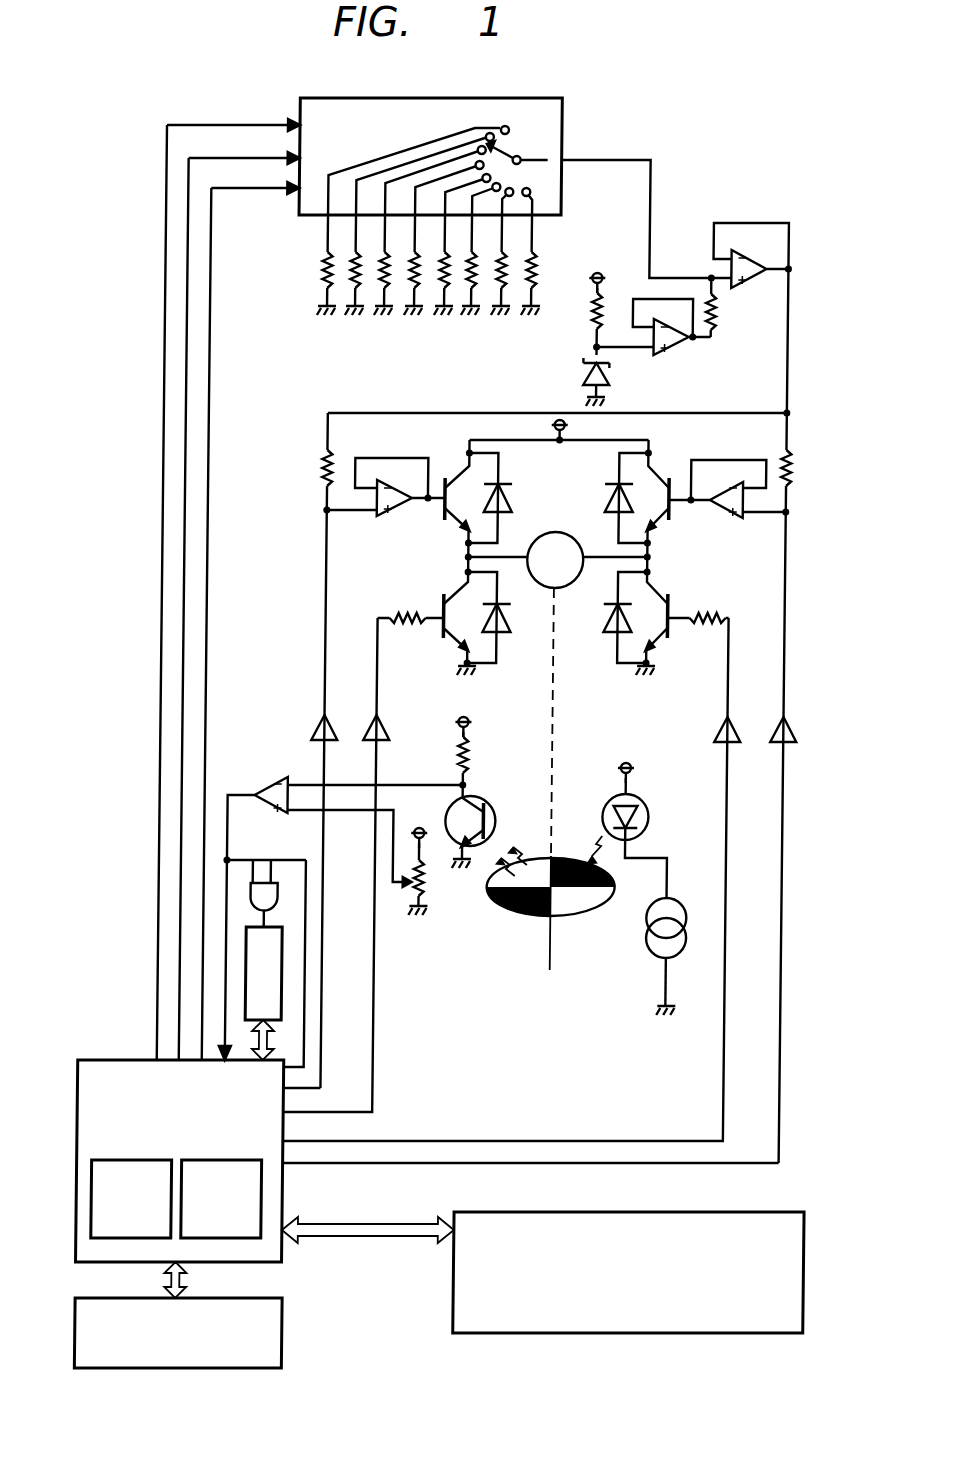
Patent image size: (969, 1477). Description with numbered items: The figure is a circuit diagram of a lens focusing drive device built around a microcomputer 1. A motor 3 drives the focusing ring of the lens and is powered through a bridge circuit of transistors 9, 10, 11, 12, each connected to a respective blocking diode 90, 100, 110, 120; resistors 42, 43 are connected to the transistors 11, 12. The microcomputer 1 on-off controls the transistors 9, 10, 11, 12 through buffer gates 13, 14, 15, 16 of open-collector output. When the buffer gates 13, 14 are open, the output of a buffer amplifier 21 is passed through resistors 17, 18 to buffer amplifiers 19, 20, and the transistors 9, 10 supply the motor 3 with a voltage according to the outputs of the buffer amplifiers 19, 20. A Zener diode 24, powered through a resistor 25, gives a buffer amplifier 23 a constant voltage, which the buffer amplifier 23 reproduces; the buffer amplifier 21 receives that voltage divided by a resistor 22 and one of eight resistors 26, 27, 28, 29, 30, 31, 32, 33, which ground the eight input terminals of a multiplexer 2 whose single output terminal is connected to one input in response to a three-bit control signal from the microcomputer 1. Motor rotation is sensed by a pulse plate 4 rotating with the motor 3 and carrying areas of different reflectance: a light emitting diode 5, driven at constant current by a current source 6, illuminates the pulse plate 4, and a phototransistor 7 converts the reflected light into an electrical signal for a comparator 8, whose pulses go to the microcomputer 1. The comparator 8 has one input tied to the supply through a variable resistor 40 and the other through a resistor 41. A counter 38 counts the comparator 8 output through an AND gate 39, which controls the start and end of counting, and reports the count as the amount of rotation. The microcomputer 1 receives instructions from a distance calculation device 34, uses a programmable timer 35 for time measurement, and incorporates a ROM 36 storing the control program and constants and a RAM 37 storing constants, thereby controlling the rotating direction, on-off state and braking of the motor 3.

The microcomputer 1 is at (179, 1135).
The multiplexer 2 is at (561, 133).
The motor 3 is at (558, 532).
The pulse plate 4 is at (574, 918).
The light emitting diode 5 is at (652, 817).
The current source 6 is at (680, 906).
The phototransistor 7 is at (490, 815).
The comparator 8 is at (274, 809).
The transistor 9 is at (448, 516).
The transistor 10 is at (666, 516).
The transistor 11 is at (441, 629).
The transistor 12 is at (672, 629).
The buffer gate 13 is at (316, 730).
The buffer gate 14 is at (792, 733).
The buffer gate 15 is at (388, 734).
The buffer gate 16 is at (724, 736).
The resistor 17 is at (325, 476).
The resistor 18 is at (792, 482).
The buffer amplifier 19 is at (402, 512).
The buffer amplifier 20 is at (719, 516).
The buffer amplifier 21 is at (746, 274).
The resistor 22 is at (713, 310).
The buffer amplifier 23 is at (672, 346).
The Zener diode 24 is at (588, 376).
The resistor 25 is at (593, 331).
The resistor 26 is at (326, 262).
The resistor 27 is at (351, 256).
The resistor 28 is at (380, 288).
The resistor 29 is at (410, 290).
The resistor 30 is at (440, 289).
The resistor 31 is at (468, 290).
The resistor 32 is at (507, 260).
The resistor 33 is at (534, 268).
The distance calculation device 34 is at (803, 1213).
The programmable timer 35 is at (292, 1348).
The ROM 36 is at (100, 1200).
The RAM 37 is at (270, 1200).
The counter 38 is at (289, 974).
The AND gate 39 is at (284, 898).
The variable resistor 40 is at (430, 892).
The resistor 41 is at (474, 770).
The resistor 42 is at (411, 616).
The resistor 43 is at (712, 617).
The blocking diode 90 is at (504, 497).
The blocking diode 100 is at (612, 497).
The blocking diode 110 is at (503, 632).
The blocking diode 120 is at (614, 632).